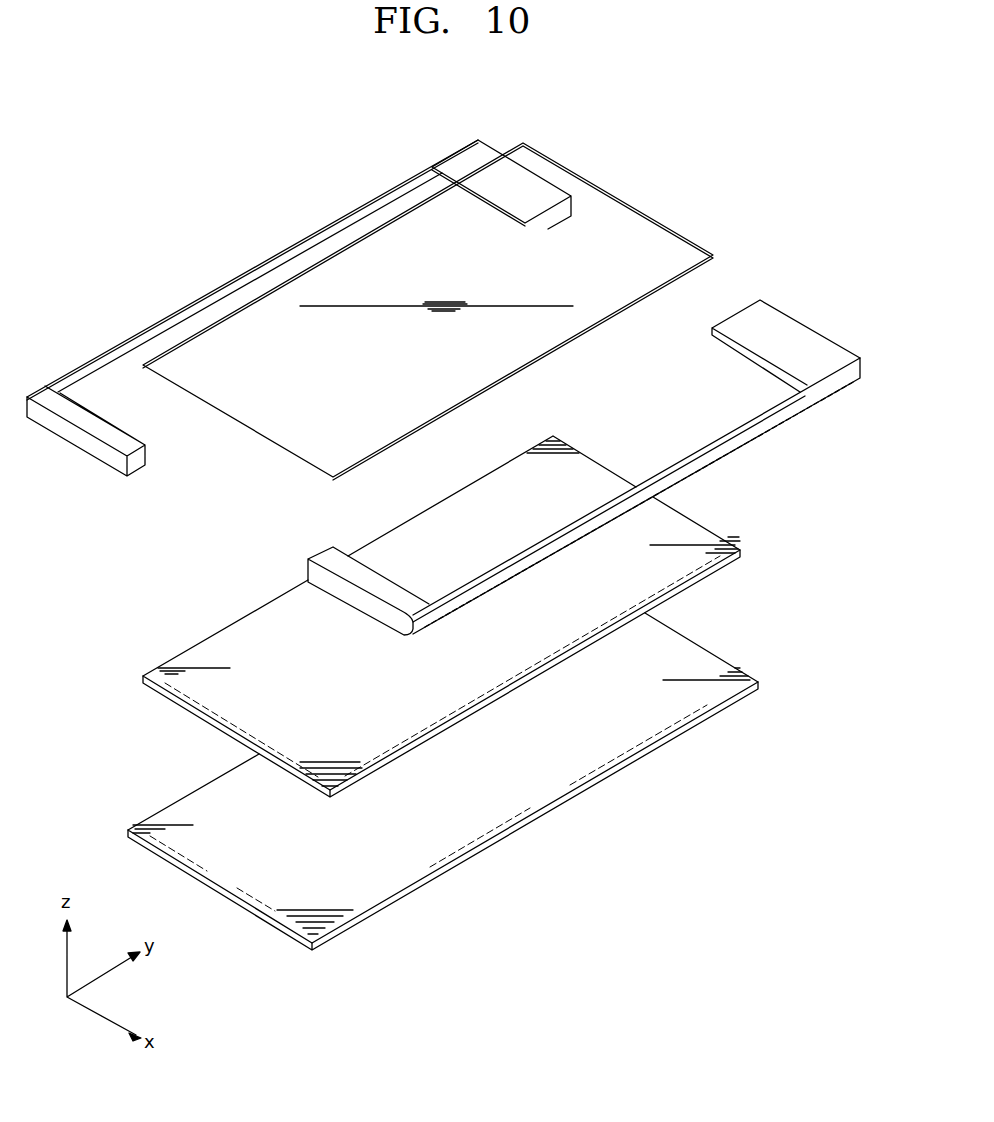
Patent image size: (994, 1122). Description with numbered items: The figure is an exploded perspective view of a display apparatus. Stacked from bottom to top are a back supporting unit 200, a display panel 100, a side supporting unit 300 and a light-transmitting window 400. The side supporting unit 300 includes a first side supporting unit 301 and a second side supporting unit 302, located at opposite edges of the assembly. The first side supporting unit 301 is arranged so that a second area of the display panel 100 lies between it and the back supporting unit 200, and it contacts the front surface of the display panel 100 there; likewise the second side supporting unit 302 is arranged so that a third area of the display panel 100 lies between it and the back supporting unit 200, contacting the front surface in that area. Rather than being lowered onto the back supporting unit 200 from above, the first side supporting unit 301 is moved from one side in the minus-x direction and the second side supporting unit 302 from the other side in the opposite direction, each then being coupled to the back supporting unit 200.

The display panel 100 is at (713, 577).
The back supporting unit 200 is at (730, 707).
The side supporting unit 300 is at (443, 387).
The first side supporting unit 301 is at (110, 477).
The second side supporting unit 302 is at (306, 560).
The light-transmitting window 400 is at (623, 215).